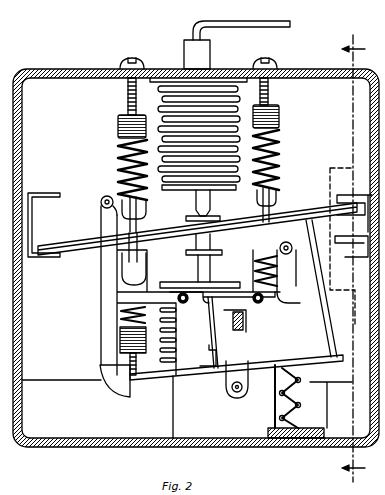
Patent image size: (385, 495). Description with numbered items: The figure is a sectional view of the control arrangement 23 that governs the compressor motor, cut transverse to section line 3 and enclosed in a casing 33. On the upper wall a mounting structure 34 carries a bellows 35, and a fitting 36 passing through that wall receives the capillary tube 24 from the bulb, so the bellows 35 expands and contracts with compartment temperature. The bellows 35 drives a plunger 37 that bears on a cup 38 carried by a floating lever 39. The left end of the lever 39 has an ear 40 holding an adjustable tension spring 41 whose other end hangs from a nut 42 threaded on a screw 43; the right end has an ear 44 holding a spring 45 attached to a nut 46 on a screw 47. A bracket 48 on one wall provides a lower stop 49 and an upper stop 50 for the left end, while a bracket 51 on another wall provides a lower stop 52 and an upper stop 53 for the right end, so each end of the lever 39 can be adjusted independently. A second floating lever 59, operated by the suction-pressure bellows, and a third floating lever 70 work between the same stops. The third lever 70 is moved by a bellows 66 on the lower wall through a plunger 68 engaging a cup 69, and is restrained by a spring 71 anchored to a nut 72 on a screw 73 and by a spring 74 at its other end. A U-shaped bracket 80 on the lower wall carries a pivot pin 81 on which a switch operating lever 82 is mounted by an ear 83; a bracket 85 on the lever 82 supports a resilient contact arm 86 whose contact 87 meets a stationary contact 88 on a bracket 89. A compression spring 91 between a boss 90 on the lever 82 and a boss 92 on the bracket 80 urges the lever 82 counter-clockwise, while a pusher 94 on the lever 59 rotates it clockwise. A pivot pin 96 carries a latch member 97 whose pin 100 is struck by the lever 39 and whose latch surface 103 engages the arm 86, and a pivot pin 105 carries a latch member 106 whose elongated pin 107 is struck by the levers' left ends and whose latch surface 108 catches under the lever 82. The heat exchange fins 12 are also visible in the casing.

The section line 3— 3 is at (358, 258).
The heat exchange fins 12 is at (168, 335).
The control arrangement 23 is at (71, 471).
The capillary tube 24 is at (234, 31).
The casing 33 is at (26, 135).
The mounting structure 34 is at (160, 84).
The bellows 35 is at (236, 105).
The fitting 36 is at (210, 52).
The plunger 37 is at (210, 203).
The cup 38 is at (188, 215).
The floating lever 39 is at (232, 222).
The ear 40 is at (146, 215).
The adjustable tension spring 41 is at (118, 165).
The nut 42 is at (118, 119).
The screw 43 is at (128, 97).
The ear 44 is at (277, 199).
The adjustable tension spring 45 is at (281, 166).
The nut 46 is at (279, 126).
The screw 47 is at (269, 92).
The bracket 48 is at (32, 220).
The lower stop 49 is at (36, 257).
The upper stop 50 is at (40, 193).
The bracket 51 is at (364, 246).
The lower stop 52 is at (346, 258).
The upper stop 53 is at (351, 195).
The second floating lever 59 is at (332, 206).
The bellows 66 is at (177, 282).
The plunger 68 is at (211, 270).
The cup 69 is at (194, 242).
The third floating lever 70 is at (226, 240).
The adjustable tension spring 71 is at (146, 248).
The nut 72 is at (146, 346).
The screw 73 is at (137, 357).
The adjustable tension spring 74 is at (256, 276).
The U-shaped bracket 80 is at (173, 407).
The pivot pin 81 is at (237, 393).
The switch operating lever 82 is at (266, 362).
The ear 83 is at (226, 386).
The bracket 85 is at (208, 356).
The resilient contact arm 86 is at (212, 337).
The contact 87 is at (212, 318).
The stationary contact 88 is at (234, 327).
The bracket 89 is at (246, 323).
The boss 90 is at (303, 372).
The compression spring 91 is at (300, 404).
The boss 92 is at (324, 428).
The pusher 94 is at (328, 335).
The pivot pin 96 is at (292, 307).
The latch member 97 is at (293, 300).
The pin 100 is at (308, 258).
The latch surface 103 is at (220, 299).
The pivot pin 105 is at (187, 303).
The latch member 106 is at (100, 300).
The elongated pin 107 is at (101, 201).
The latch surface 108 is at (108, 365).